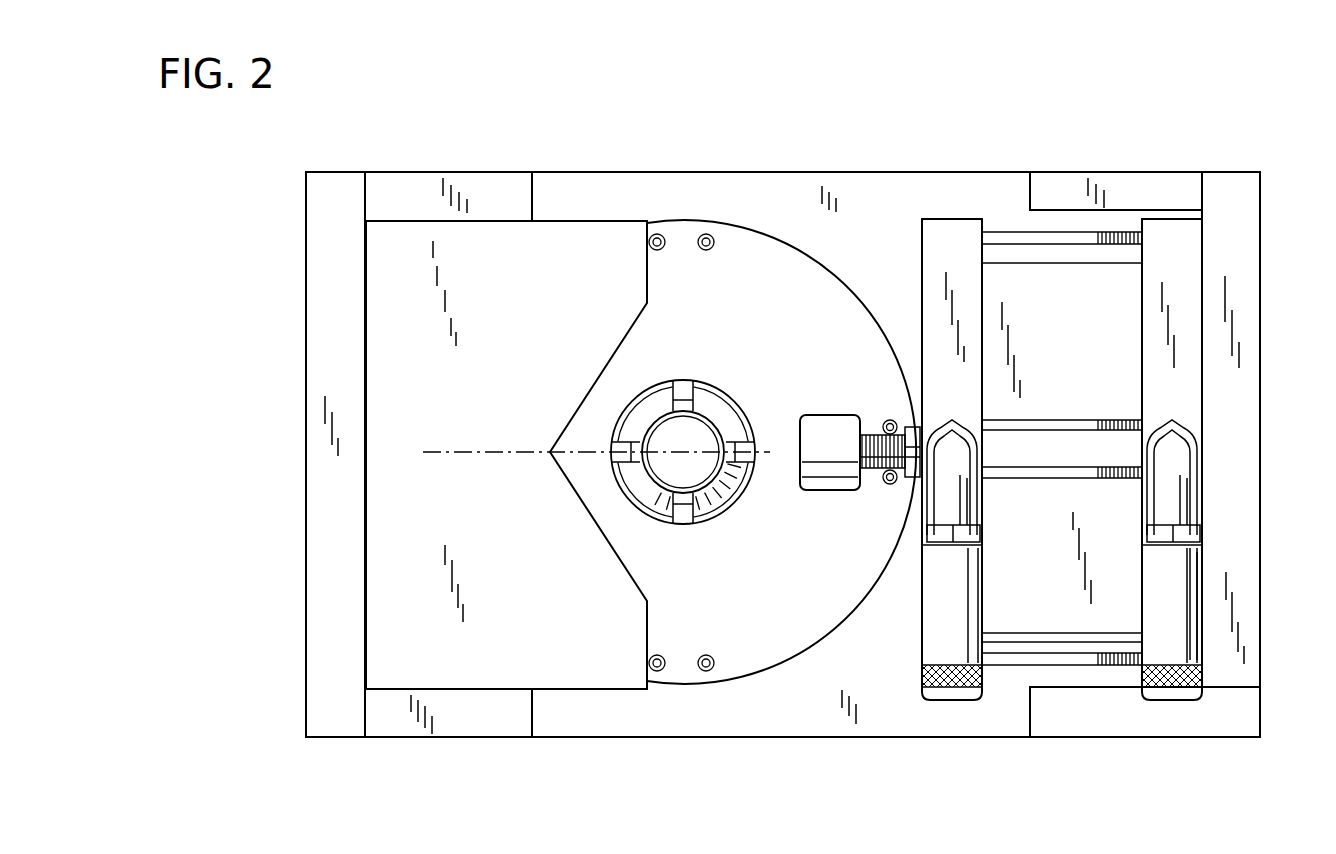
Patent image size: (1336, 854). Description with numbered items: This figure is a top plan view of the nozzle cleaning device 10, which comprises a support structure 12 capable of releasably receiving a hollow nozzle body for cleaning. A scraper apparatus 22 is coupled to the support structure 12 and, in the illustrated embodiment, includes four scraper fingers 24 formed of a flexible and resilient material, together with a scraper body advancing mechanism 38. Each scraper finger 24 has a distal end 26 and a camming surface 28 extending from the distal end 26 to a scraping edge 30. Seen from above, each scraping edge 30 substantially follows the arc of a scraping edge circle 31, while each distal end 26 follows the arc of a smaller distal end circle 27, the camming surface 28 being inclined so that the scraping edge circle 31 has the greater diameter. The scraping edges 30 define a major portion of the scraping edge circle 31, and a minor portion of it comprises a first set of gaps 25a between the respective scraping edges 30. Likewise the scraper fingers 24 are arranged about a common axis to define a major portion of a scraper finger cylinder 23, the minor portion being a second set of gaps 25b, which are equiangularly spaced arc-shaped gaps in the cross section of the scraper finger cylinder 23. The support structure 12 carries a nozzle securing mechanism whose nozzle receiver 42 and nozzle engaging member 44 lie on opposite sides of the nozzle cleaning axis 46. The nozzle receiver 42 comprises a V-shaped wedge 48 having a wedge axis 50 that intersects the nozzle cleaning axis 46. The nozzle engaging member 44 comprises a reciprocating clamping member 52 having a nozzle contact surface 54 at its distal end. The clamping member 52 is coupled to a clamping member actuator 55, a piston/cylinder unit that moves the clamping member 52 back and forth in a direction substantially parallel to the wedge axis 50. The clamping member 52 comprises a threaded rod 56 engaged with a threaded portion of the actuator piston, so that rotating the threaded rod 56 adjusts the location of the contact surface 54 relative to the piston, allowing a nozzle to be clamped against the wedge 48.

The nozzle cleaning device 10 is at (262, 300).
The support structure 12 is at (1262, 262).
The scraper apparatus 22 is at (764, 692).
The scraper finger cylinder 23 is at (598, 491).
The scraper fingers 24 is at (703, 522).
The first set of gaps 25a is at (678, 498).
The second set of gaps 25b is at (687, 500).
The distal end 26 is at (716, 514).
The distal end circle 27 is at (680, 452).
The camming surface 28 is at (730, 484).
The scraping edge 30 is at (753, 472).
The scraping edge circle 31 is at (728, 391).
The scraper body advancing mechanism 38 is at (722, 301).
The nozzle receiver 42 is at (522, 279).
The nozzle engaging member 44 is at (911, 371).
The nozzle cleaning axis 46 is at (652, 432).
The V-shaped wedge 48 is at (572, 468).
The wedge axis 50 is at (482, 452).
The reciprocating clamping member 52 is at (858, 487).
The nozzle contact surface 54 is at (800, 455).
The clamping member actuator 55 is at (1070, 319).
The threaded rod 56 is at (866, 435).